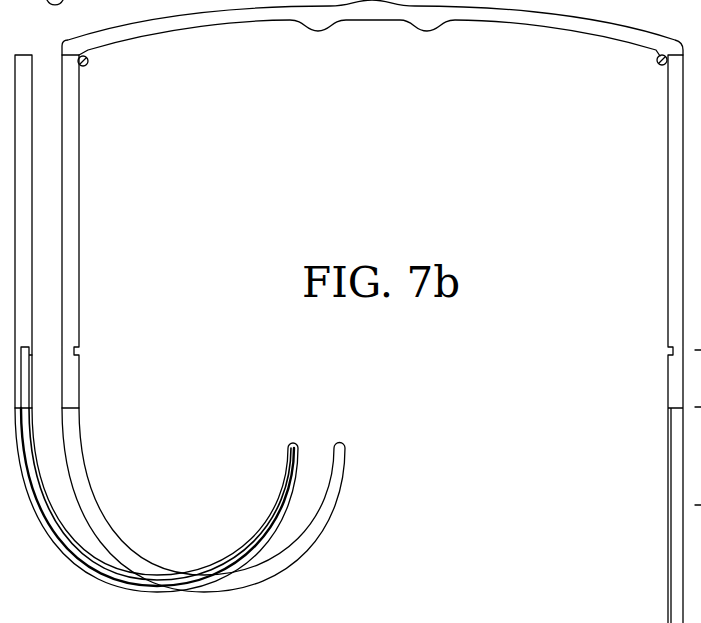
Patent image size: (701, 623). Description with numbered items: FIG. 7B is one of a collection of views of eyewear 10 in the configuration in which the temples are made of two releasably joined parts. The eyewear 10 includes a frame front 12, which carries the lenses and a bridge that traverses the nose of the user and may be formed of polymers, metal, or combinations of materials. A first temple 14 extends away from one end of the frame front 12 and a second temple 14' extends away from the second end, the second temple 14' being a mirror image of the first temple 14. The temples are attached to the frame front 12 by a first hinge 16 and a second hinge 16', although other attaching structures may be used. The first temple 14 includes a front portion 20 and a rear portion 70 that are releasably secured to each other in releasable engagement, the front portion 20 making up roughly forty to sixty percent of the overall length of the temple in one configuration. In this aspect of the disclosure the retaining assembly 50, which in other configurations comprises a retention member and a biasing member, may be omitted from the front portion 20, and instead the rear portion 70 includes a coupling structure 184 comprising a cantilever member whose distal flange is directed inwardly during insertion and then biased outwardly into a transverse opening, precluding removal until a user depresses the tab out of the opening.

The eyewear 10 is at (307, 100).
The frame front 12 is at (516, 48).
The first temple 14 is at (116, 231).
The second temple 14' is at (631, 339).
The first hinge 16 is at (121, 84).
The second hinge 16' is at (618, 83).
The front portion 20 is at (104, 163).
The retaining assembly 50 is at (104, 363).
The coupling structure 184 is at (104, 388).
The rear portion 70 is at (122, 514).